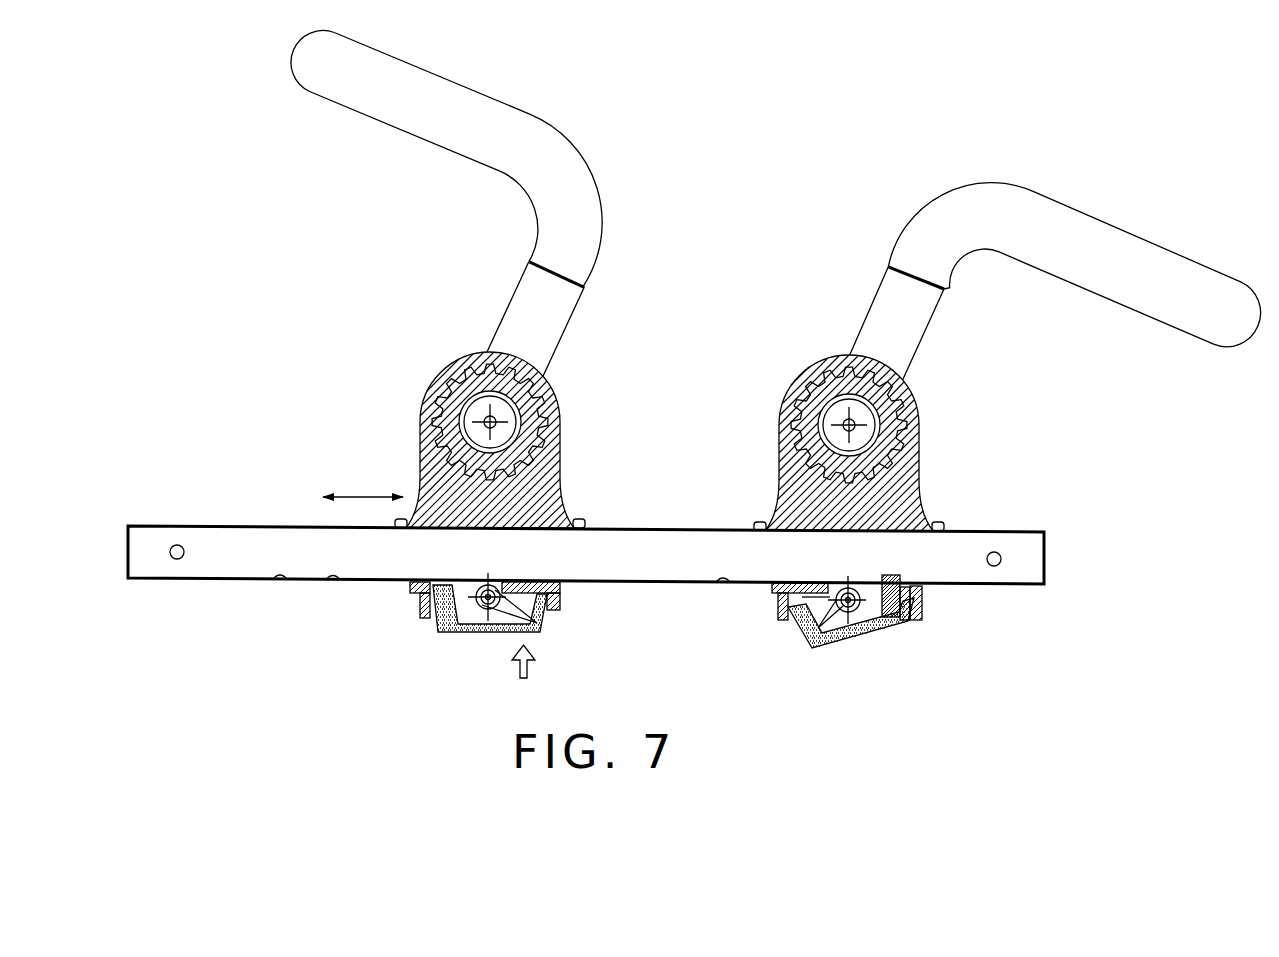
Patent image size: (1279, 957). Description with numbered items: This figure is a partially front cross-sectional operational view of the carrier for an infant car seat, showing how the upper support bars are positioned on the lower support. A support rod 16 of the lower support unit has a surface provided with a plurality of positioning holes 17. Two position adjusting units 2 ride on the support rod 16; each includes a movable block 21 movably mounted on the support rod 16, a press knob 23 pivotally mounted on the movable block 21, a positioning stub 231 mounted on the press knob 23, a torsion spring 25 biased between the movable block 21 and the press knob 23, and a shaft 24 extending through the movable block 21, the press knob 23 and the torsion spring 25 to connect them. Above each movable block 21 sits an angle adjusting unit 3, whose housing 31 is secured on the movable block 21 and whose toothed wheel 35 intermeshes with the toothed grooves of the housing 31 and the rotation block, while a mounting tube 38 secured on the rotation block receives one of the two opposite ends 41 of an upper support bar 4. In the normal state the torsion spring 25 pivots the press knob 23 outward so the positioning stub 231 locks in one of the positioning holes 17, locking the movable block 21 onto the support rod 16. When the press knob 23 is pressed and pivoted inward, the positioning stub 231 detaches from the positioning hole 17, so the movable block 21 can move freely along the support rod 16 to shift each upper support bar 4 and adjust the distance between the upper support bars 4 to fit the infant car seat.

The position adjusting unit 2 is at (693, 669).
The angle adjusting unit 3 is at (672, 396).
The upper support bar 4 is at (749, 188).
The support rod 16 is at (586, 608).
The positioning hole 17 is at (491, 632).
The movable block 21 is at (423, 620).
The press knob 23 is at (468, 632).
The shaft 24 is at (540, 623).
The torsion spring 25 is at (560, 607).
The housing 31 is at (423, 413).
The toothed wheel 35 is at (450, 367).
The mounting tube 38 is at (508, 322).
The end of upper support bar 41 is at (430, 133).
The positioning stub 231 is at (423, 593).